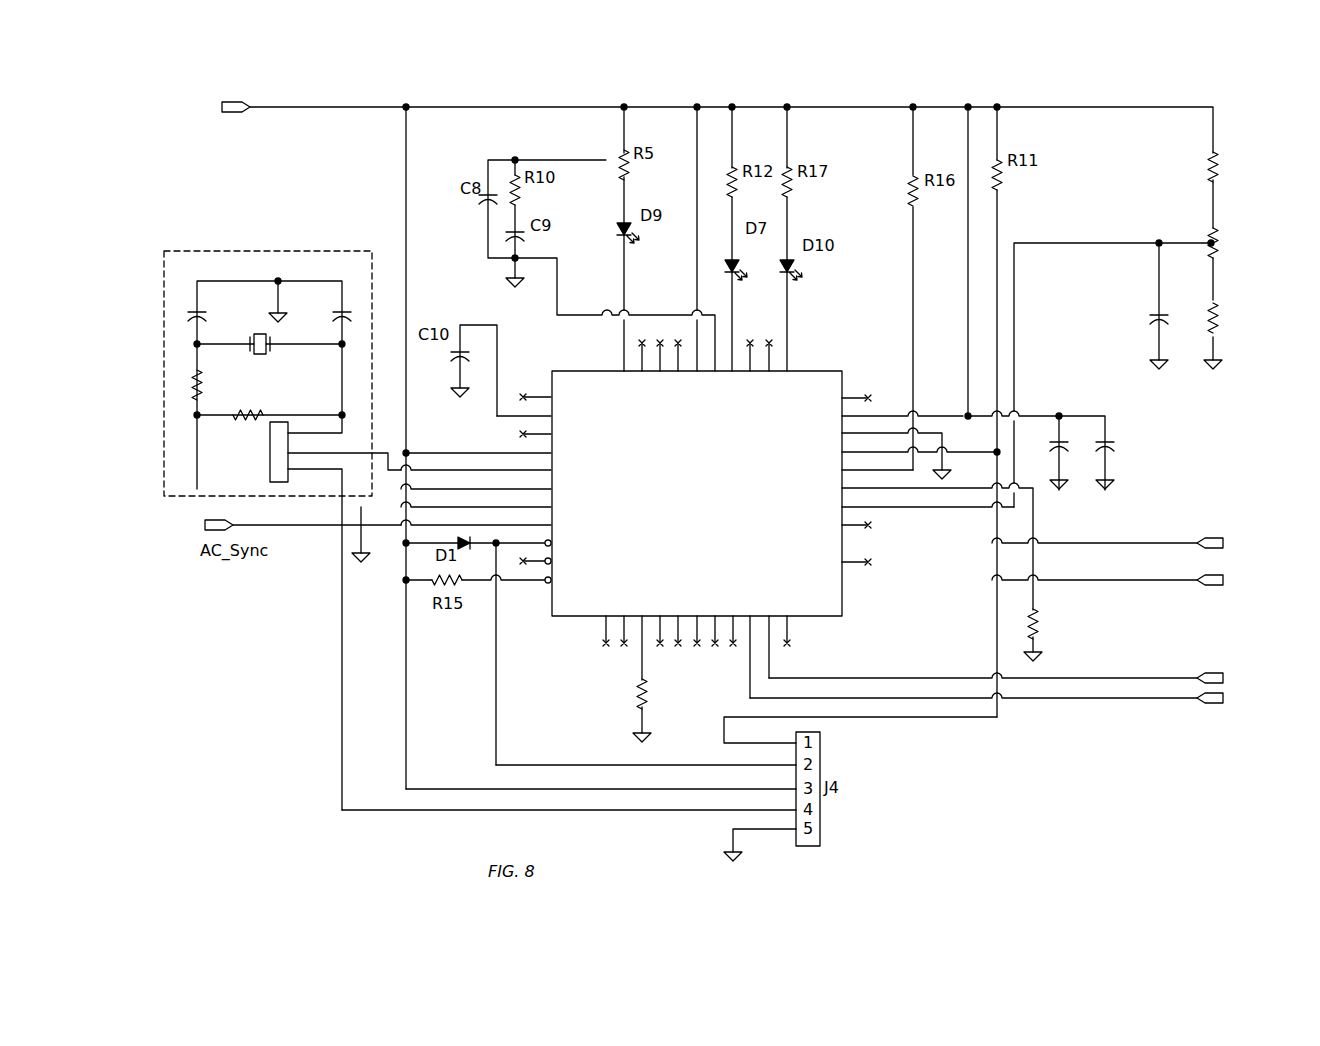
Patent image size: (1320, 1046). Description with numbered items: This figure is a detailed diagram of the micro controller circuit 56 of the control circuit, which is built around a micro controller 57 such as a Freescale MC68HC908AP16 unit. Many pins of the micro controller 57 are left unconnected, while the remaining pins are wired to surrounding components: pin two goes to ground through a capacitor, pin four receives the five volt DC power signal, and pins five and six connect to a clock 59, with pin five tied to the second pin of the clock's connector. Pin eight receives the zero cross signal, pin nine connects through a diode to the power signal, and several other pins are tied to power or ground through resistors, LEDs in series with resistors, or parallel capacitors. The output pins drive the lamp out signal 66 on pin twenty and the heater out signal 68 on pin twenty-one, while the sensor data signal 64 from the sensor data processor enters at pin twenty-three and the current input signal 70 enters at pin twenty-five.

The micro controller circuit 56 is at (968, 98).
The micro controller 57 is at (779, 541).
The clock 59 is at (279, 251).
The sensor data signal 64 is at (1104, 580).
The lamp out signal 66 is at (1084, 680).
The heater out signal 68 is at (1083, 700).
The current input signal 70 is at (1118, 543).